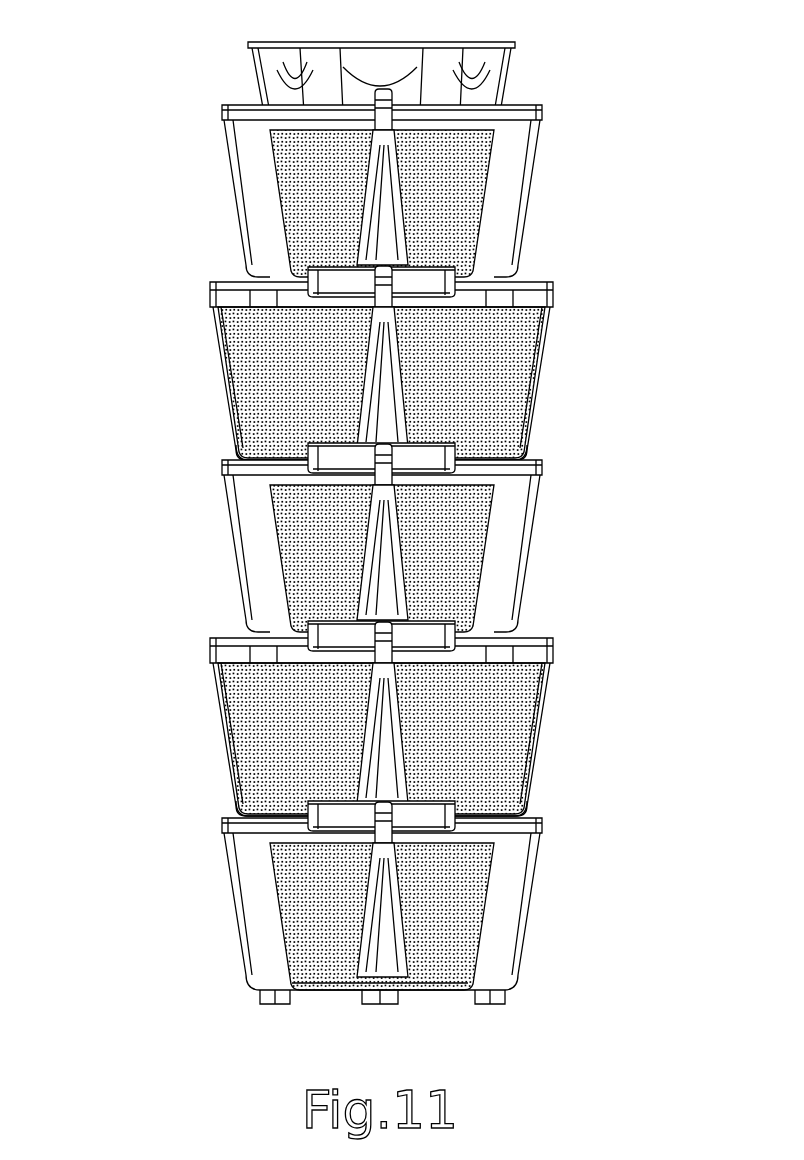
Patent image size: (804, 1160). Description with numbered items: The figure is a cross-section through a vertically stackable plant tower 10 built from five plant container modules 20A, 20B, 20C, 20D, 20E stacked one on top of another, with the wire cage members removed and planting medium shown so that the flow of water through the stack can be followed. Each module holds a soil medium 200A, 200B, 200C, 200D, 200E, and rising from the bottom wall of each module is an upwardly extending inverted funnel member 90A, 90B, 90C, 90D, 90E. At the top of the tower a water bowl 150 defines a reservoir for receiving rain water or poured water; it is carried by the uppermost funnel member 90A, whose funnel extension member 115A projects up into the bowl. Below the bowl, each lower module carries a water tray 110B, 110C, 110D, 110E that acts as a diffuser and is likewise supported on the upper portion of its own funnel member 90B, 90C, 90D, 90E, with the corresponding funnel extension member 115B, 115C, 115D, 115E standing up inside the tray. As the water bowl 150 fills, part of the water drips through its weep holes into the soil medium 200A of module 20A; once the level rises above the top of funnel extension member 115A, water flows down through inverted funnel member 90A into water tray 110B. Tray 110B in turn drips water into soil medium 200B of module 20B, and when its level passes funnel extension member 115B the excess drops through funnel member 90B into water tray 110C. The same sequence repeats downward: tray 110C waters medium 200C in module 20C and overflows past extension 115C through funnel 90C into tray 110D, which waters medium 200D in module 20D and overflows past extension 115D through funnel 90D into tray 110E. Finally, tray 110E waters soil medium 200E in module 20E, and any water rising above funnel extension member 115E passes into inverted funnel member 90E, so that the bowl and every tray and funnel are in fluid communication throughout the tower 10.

The vertically stackable plant tower 10 is at (398, 511).
The water bowl 150 is at (393, 74).
The funnel extension member 115A is at (358, 88).
The funnel extension member 115B is at (283, 248).
The funnel extension member 115C is at (298, 440).
The funnel extension member 115D is at (262, 602).
The funnel extension member 115E is at (265, 815).
The plant container module 20A is at (351, 197).
The plant container module 20B is at (385, 371).
The plant container module 20C is at (390, 548).
The plant container module 20D is at (388, 739).
The plant container module 20E is at (410, 902).
The inverted funnel member 90A is at (382, 170).
The inverted funnel member 90B is at (382, 392).
The inverted funnel member 90C is at (385, 556).
The inverted funnel member 90D is at (383, 757).
The inverted funnel member 90E is at (390, 927).
The water tray 110B is at (440, 281).
The water tray 110C is at (440, 460).
The water tray 110D is at (440, 645).
The water tray 110E is at (440, 832).
The soil medium 200A is at (460, 202).
The soil medium 200B is at (512, 350).
The soil medium 200C is at (493, 508).
The soil medium 200D is at (515, 700).
The soil medium 200E is at (473, 877).